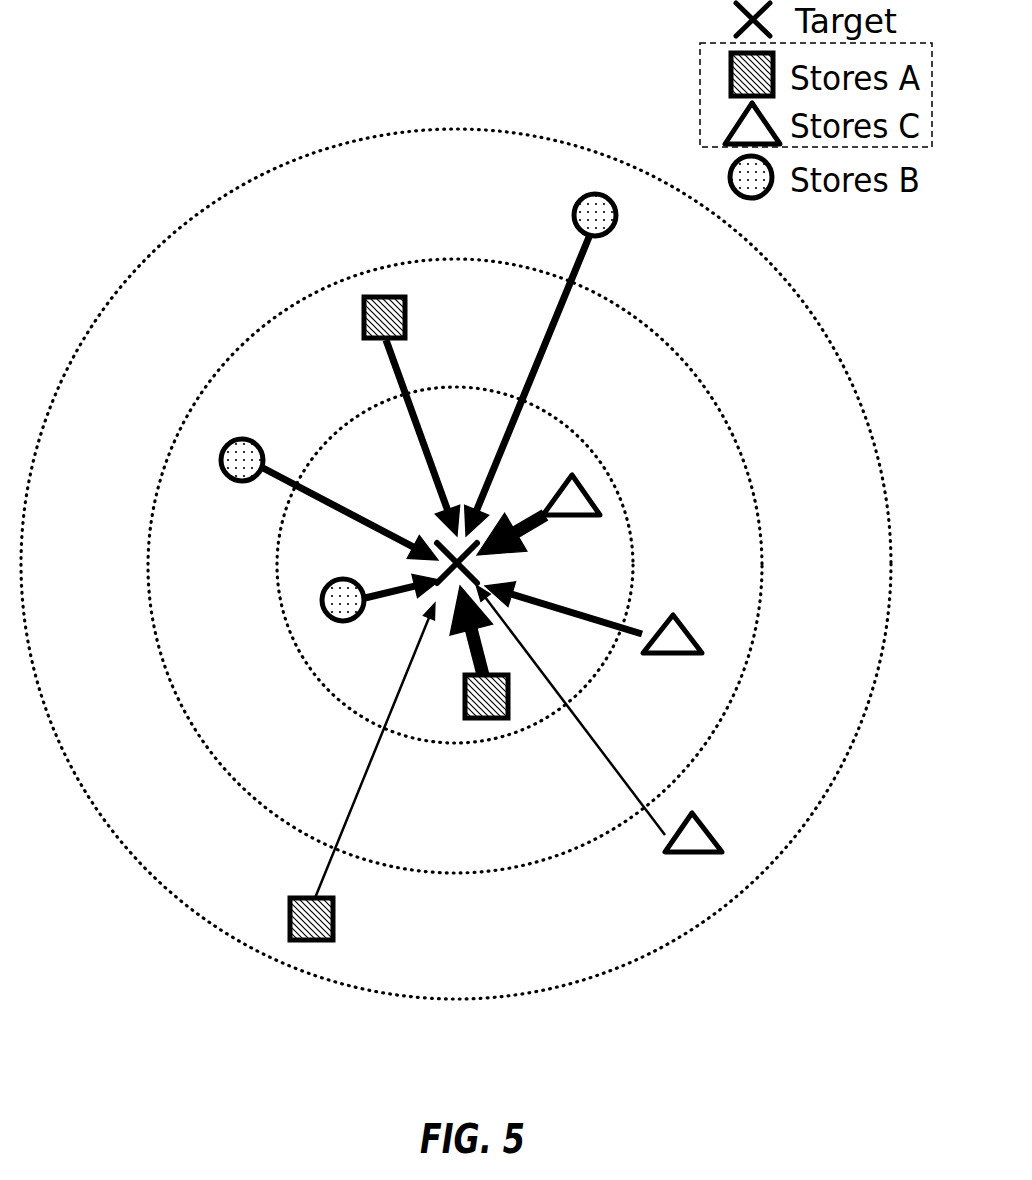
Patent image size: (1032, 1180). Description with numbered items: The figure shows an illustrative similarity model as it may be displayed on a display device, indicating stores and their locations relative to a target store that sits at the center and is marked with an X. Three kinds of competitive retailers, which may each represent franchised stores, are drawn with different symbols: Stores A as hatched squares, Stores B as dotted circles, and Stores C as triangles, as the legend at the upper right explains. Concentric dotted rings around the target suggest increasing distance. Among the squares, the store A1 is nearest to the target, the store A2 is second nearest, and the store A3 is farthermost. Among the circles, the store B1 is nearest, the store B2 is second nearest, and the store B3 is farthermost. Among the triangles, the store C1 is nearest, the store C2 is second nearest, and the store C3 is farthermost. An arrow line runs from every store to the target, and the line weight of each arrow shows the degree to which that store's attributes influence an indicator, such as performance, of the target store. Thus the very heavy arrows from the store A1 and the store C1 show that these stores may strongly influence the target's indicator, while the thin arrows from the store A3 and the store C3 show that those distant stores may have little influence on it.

The store A1 is at (486, 718).
The store A2 is at (405, 318).
The store A3 is at (291, 900).
The store B1 is at (323, 594).
The store B2 is at (234, 441).
The store B3 is at (608, 232).
The store C1 is at (598, 515).
The store C2 is at (695, 653).
The store C3 is at (718, 852).